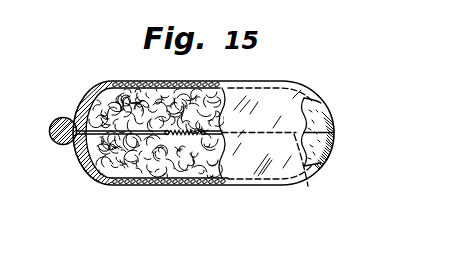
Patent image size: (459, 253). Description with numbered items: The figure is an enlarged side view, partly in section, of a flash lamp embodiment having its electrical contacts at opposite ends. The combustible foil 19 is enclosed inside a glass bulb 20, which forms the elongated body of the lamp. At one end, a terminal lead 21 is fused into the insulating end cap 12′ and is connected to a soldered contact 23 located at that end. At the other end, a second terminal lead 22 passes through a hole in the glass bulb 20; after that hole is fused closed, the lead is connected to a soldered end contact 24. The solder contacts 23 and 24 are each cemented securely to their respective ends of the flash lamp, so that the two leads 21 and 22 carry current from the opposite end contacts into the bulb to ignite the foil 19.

The insulating end cap 12′ is at (75, 153).
The foil 19 is at (177, 177).
The glass bulb 20 is at (238, 185).
The terminal lead 21 is at (84, 166).
The terminal lead 22 is at (308, 186).
The soldered contact 23 is at (56, 119).
The soldered end contact 24 is at (336, 134).